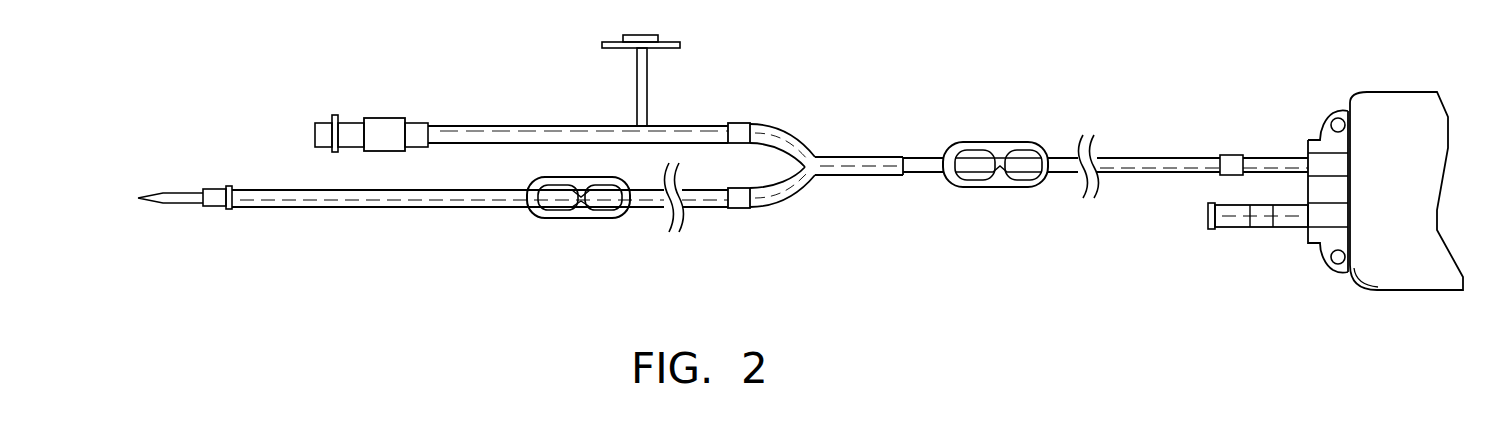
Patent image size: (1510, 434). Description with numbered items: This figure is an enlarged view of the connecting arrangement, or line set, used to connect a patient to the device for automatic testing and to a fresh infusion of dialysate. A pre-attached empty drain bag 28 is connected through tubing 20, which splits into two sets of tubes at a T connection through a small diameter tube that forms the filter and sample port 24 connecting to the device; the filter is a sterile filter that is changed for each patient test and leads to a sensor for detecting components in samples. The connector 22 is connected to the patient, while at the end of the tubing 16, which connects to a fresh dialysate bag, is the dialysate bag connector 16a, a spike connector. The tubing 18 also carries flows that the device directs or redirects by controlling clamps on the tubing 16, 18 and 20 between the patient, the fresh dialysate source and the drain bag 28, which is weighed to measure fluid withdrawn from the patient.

The tubing 16 is at (333, 207).
The dialysate bag connector 16a is at (215, 208).
The tubing 18 is at (1163, 158).
The tubing 20 is at (453, 126).
The connector 22 is at (385, 118).
The filter and sample port 24 is at (647, 72).
The drain bag 28 is at (1380, 292).